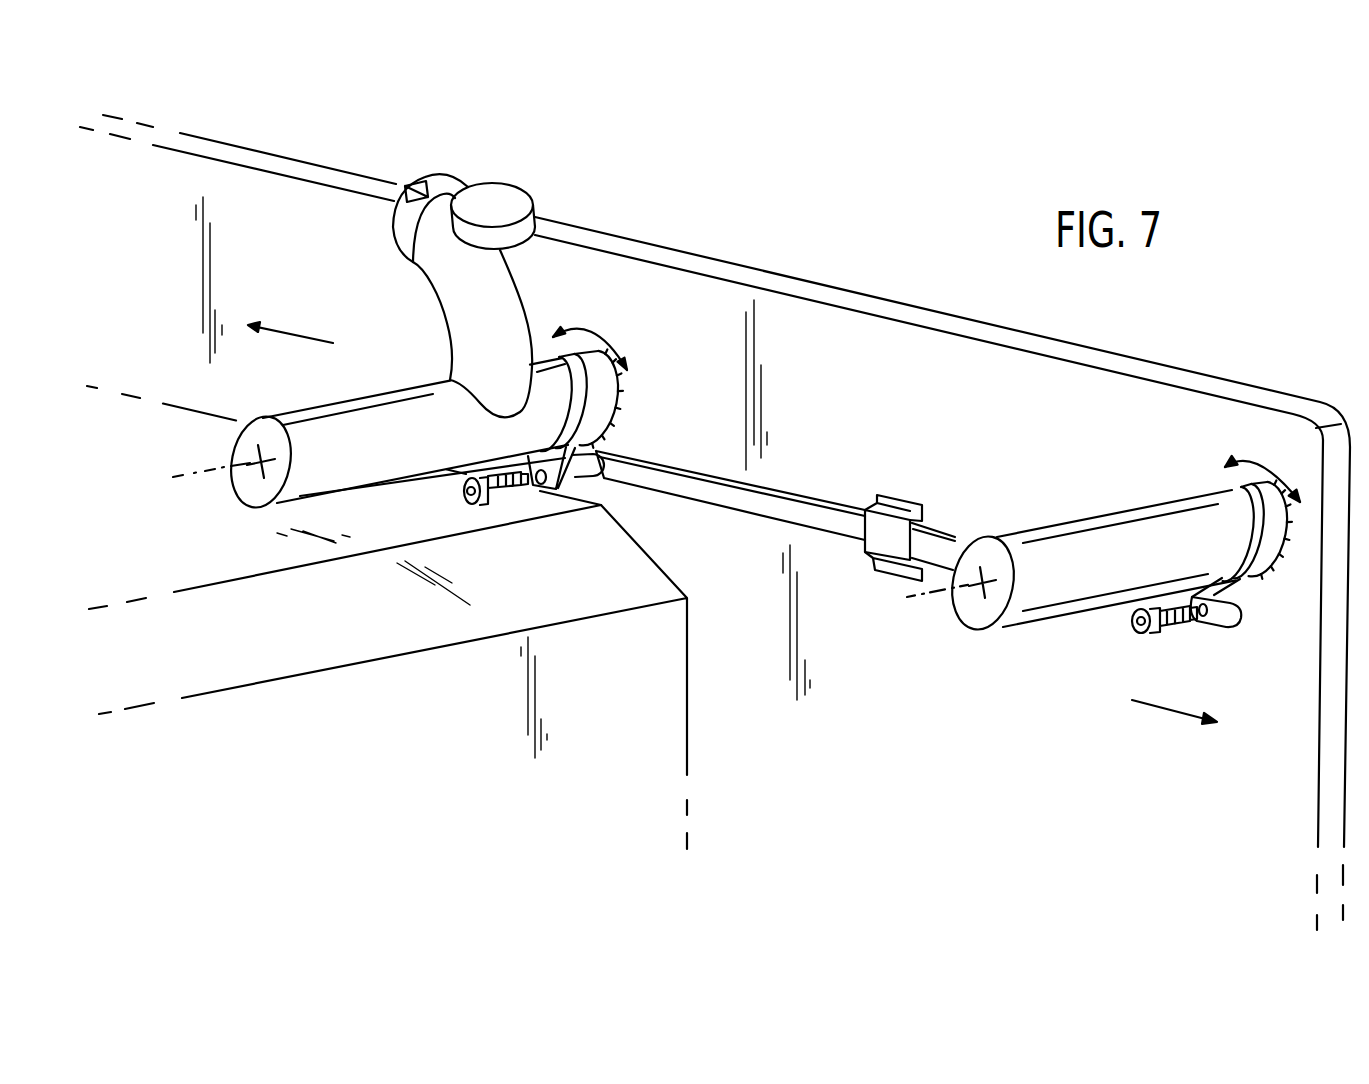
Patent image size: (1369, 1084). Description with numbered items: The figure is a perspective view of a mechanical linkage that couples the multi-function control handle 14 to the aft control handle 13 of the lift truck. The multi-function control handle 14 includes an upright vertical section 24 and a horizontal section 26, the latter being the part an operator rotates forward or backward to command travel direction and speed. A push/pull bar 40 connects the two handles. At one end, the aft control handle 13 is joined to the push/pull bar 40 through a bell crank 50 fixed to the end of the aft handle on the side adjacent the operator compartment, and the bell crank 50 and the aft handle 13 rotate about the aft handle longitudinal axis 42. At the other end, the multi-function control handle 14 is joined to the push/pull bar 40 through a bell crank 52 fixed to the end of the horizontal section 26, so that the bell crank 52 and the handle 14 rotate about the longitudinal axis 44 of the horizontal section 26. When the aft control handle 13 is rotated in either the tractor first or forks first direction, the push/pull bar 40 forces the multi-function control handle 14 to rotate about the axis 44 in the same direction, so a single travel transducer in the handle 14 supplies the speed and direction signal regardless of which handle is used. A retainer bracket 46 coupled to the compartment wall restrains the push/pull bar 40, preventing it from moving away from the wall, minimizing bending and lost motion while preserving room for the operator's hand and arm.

The aft control handle 13 is at (978, 633).
The multi-function control handle 14 is at (515, 175).
The vertical section 24 is at (382, 492).
The horizontal section 26 is at (508, 273).
The push/pull bar 40 is at (788, 485).
The aft handle longitudinal axis 42 is at (932, 595).
The handle section longitudinal axis 44 is at (212, 470).
The retainer bracket 46 is at (892, 578).
The bell crank 50 is at (1243, 613).
The bell crank 52 is at (563, 488).